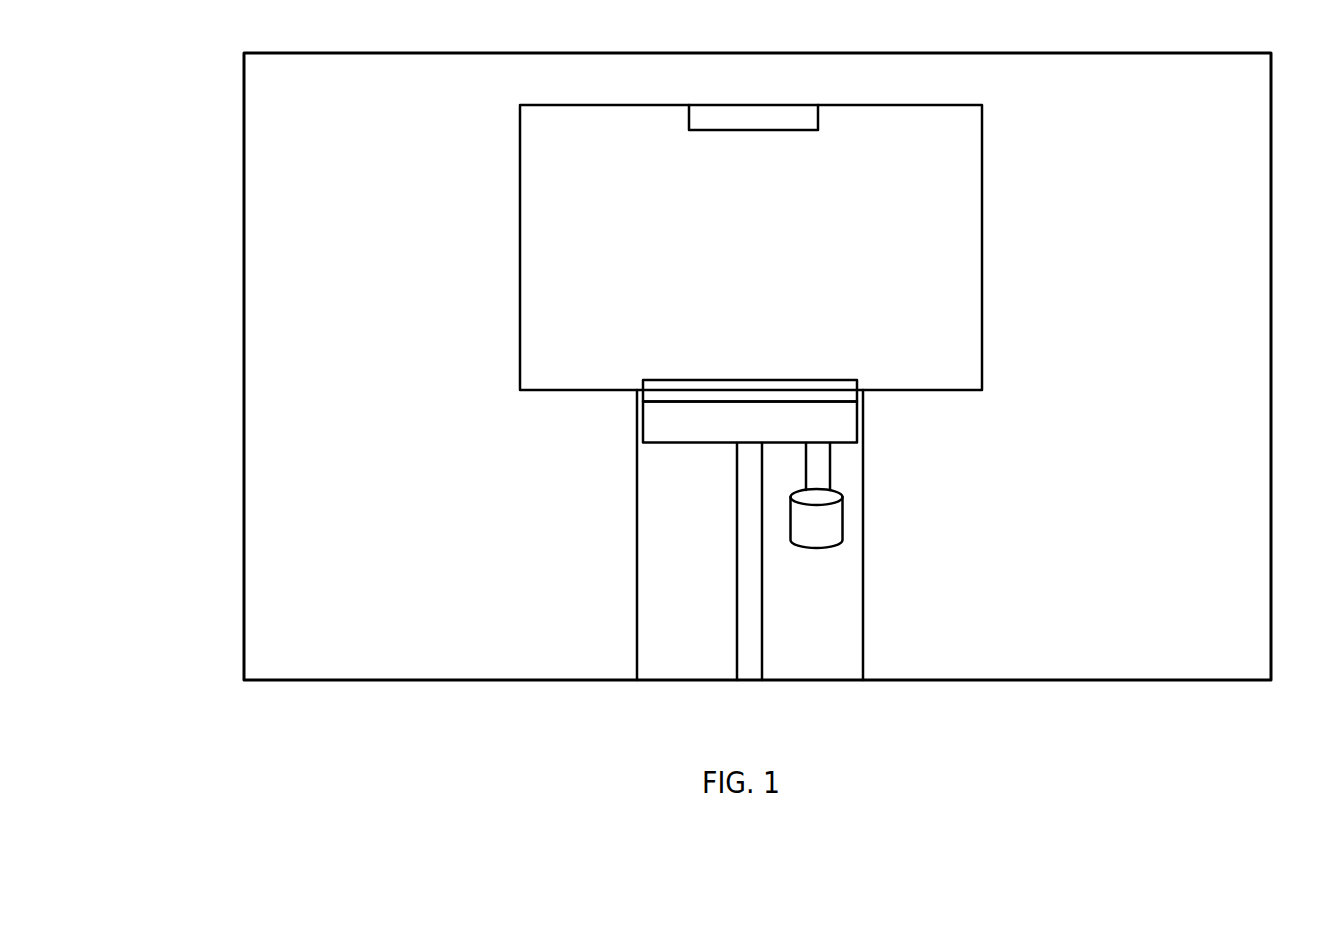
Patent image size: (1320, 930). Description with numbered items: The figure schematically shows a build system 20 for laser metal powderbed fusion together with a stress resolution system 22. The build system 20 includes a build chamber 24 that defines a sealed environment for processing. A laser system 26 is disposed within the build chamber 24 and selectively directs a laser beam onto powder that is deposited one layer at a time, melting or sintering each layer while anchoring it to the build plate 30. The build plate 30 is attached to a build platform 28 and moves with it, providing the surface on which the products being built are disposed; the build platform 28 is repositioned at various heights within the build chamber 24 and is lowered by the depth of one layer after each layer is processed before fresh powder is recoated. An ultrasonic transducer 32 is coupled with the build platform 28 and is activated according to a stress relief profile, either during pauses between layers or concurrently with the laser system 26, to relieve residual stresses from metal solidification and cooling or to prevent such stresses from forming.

The build system 20 is at (273, 150).
The stress resolution system 22 is at (1020, 487).
The build chamber 24 is at (528, 222).
The laser system 26 is at (775, 118).
The build platform 28 is at (848, 430).
The build plate 30 is at (707, 390).
The ultrasonic transducer 32 is at (830, 516).